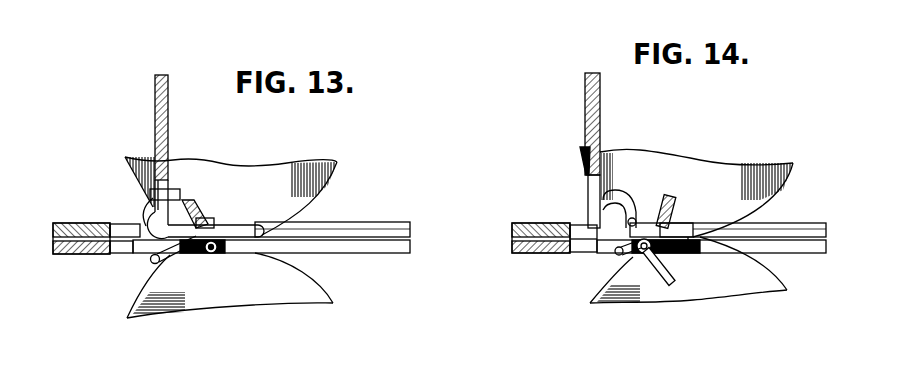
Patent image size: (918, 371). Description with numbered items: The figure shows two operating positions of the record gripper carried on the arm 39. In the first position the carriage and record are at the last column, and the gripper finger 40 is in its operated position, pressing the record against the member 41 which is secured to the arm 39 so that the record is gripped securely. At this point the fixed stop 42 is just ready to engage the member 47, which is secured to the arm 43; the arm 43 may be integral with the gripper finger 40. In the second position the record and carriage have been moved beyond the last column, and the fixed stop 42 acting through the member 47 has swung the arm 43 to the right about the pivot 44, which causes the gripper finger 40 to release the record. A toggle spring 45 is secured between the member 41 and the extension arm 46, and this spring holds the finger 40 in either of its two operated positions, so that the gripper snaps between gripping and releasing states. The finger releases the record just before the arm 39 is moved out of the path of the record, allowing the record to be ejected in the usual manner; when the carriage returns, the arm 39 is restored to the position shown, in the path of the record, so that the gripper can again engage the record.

In FIG. 13, the arm 39 is at (166, 113).
In FIG. 14, the arm 39 is at (603, 106).
In FIG. 13, the gripper finger 40 is at (243, 260).
In FIG. 14, the gripper finger 40 is at (674, 277).
In FIG. 13, the member 41 is at (256, 228).
In FIG. 14, the member 41 is at (693, 253).
In FIG. 13, the fixed stop 42 is at (143, 218).
In FIG. 14, the fixed stop 42 is at (625, 200).
In FIG. 13, the arm 43 is at (188, 200).
In FIG. 14, the arm 43 is at (672, 202).
In FIG. 14, the pivot 44 is at (640, 258).
In FIG. 13, the toggle spring 45 is at (153, 260).
In FIG. 14, the toggle spring 45 is at (614, 254).
In FIG. 13, the extension arm 46 is at (200, 253).
In FIG. 14, the extension arm 46 is at (629, 221).
In FIG. 13, the member 47 is at (199, 221).
In FIG. 14, the member 47 is at (678, 216).